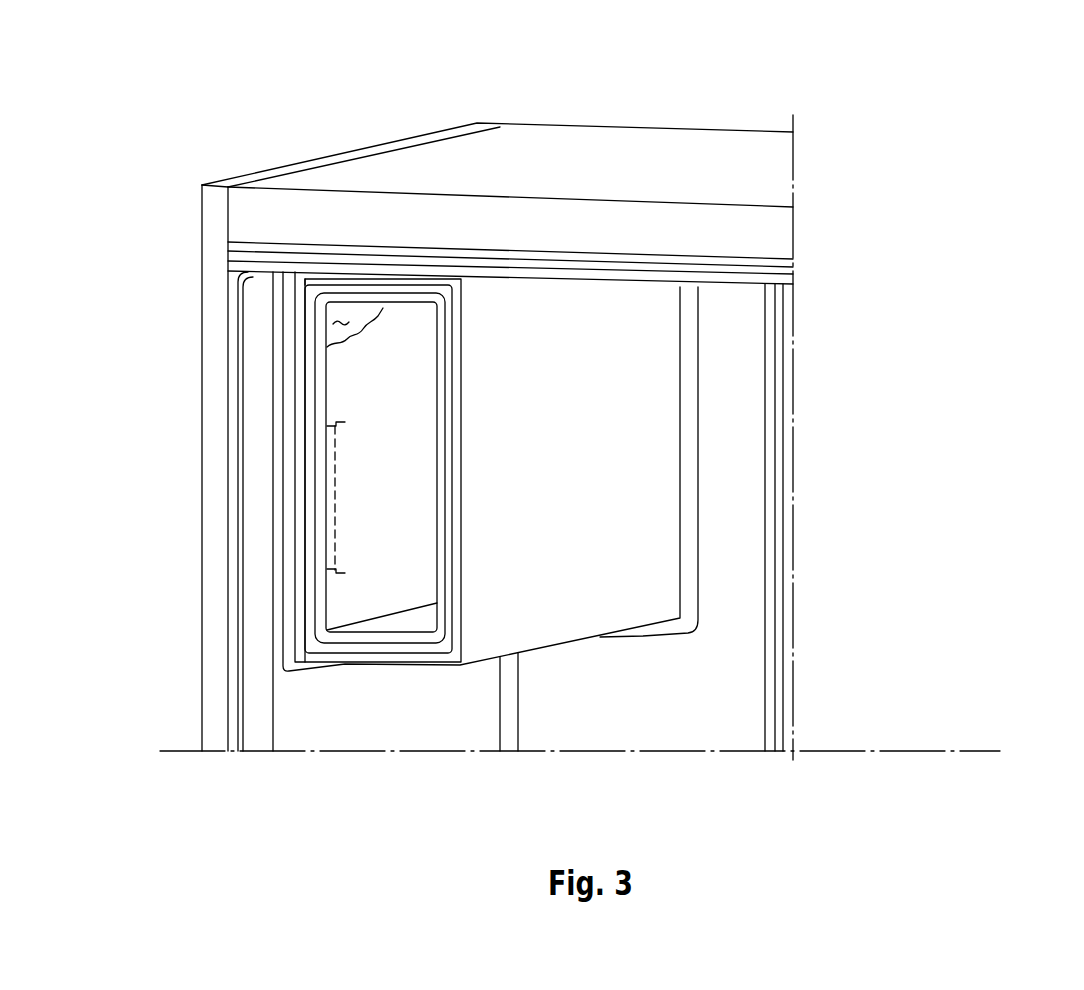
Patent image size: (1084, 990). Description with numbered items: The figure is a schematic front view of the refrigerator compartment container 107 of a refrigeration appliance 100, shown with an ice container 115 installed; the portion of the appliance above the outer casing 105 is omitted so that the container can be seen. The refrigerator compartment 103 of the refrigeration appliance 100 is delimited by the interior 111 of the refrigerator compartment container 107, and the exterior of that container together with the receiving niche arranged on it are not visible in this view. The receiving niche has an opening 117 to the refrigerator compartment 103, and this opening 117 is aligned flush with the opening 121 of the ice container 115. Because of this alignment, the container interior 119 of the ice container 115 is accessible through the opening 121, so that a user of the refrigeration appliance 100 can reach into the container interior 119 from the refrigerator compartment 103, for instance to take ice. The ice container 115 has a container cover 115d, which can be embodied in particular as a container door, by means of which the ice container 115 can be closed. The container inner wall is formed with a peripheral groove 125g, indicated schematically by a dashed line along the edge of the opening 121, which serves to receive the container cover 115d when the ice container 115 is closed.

The refrigeration appliance 100 is at (690, 98).
The refrigerator compartment 103 is at (723, 440).
The outer casing 105 is at (578, 157).
The refrigerator compartment container 107 is at (235, 268).
The interior 111 is at (720, 606).
The ice container 115 is at (330, 567).
The container cover 115d is at (345, 320).
The opening 117 is at (445, 655).
The container interior 119 is at (378, 565).
The opening 121 is at (313, 480).
The peripheral groove 125g is at (333, 463).